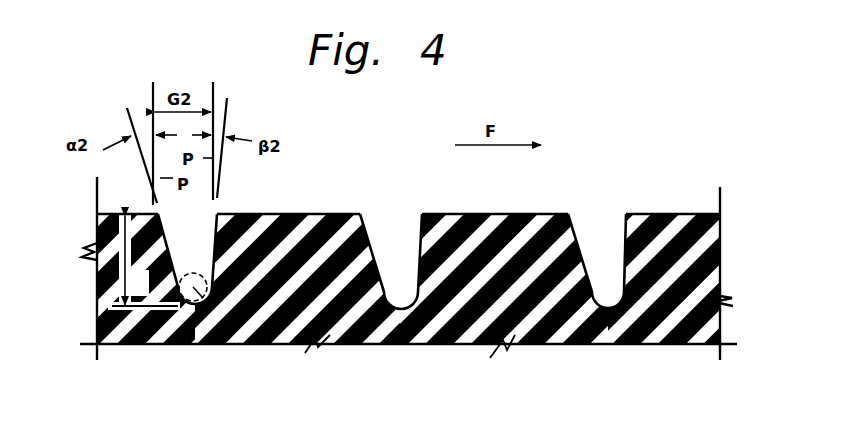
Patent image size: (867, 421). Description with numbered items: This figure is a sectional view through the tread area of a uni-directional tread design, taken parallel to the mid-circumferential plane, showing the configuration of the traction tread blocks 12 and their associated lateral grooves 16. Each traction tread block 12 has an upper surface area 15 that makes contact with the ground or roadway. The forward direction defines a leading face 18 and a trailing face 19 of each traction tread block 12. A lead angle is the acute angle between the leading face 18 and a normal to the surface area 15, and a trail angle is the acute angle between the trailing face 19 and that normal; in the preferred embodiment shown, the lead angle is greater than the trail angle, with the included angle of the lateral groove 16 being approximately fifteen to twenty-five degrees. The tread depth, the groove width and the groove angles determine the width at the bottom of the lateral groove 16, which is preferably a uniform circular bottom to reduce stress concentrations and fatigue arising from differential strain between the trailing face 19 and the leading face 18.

The traction tread block 12 is at (507, 282).
The surface area 15 is at (505, 216).
The lateral groove 16 is at (182, 235).
The leading face 18 is at (581, 239).
The trailing face 19 is at (416, 241).